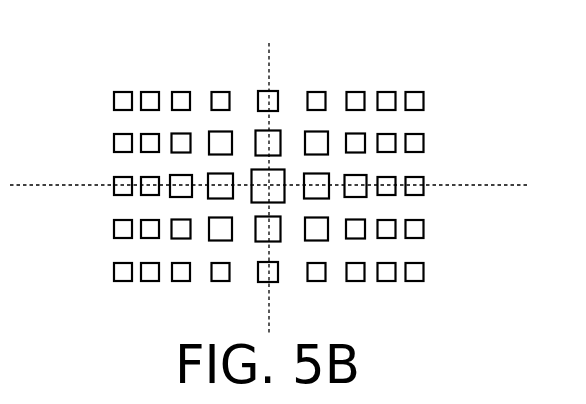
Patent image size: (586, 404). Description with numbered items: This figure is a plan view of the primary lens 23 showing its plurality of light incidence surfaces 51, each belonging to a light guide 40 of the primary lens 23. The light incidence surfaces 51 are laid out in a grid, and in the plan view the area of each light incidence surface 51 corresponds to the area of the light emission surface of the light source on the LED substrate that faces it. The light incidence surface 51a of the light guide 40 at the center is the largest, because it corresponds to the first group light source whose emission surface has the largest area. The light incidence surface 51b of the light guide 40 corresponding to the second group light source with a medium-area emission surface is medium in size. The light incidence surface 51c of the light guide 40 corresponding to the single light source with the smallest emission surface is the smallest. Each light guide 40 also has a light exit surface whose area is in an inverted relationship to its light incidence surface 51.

The primary lens 23 is at (269, 180).
The light incidence surface 51 is at (414, 143).
The light incidence surface 51a is at (259, 193).
The light incidence surface 51b is at (316, 229).
The light incidence surface 51c is at (415, 272).
The light guide 40 is at (414, 229).